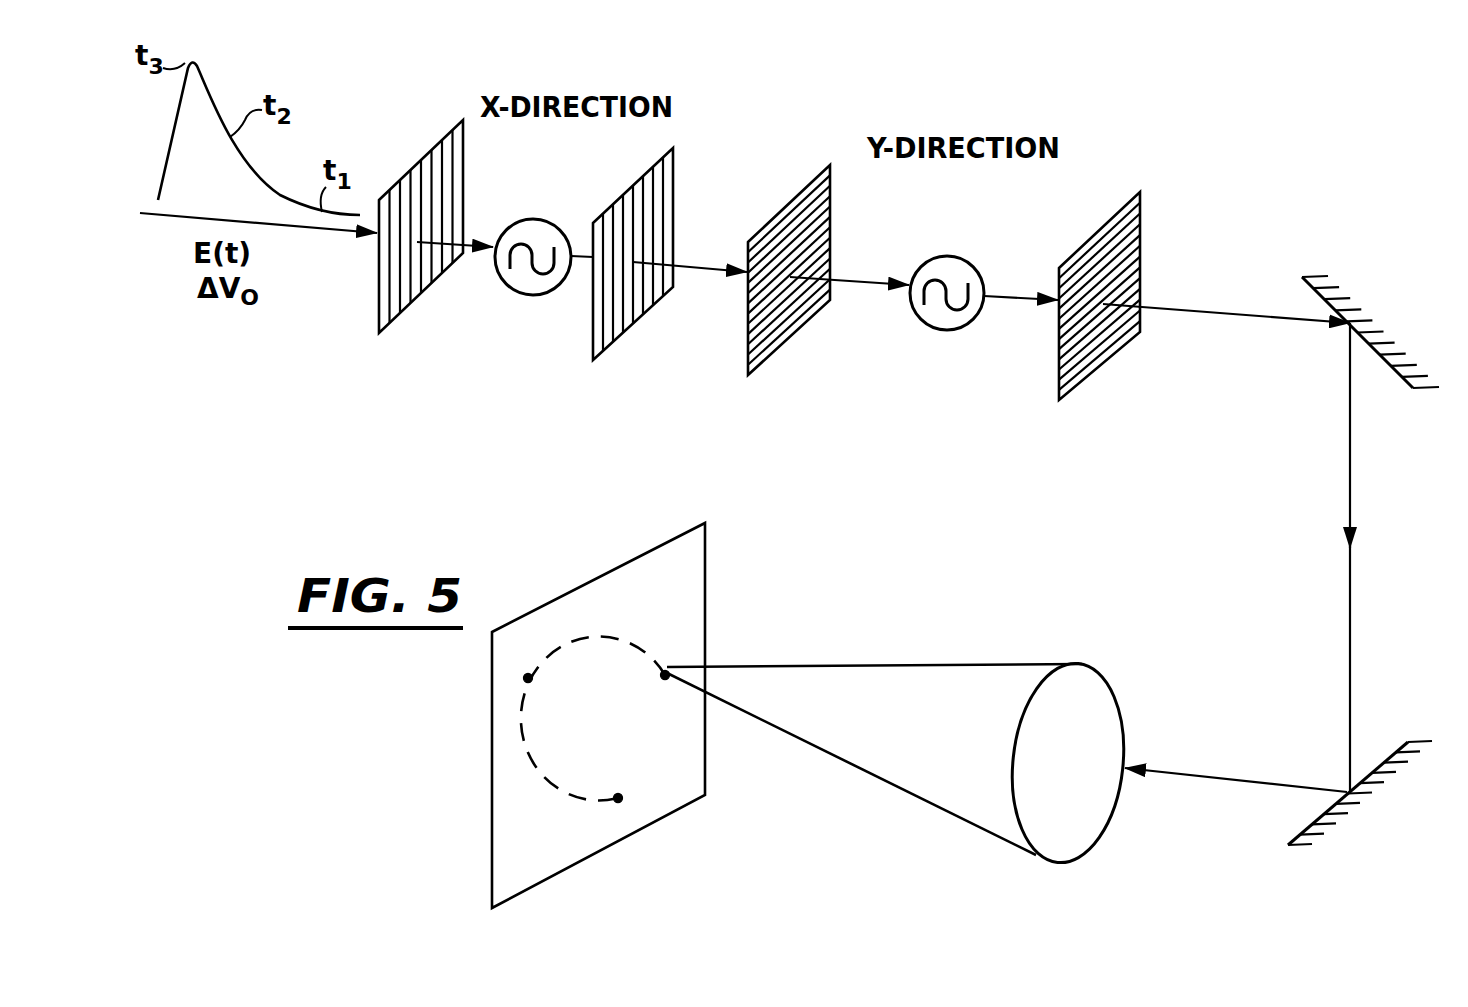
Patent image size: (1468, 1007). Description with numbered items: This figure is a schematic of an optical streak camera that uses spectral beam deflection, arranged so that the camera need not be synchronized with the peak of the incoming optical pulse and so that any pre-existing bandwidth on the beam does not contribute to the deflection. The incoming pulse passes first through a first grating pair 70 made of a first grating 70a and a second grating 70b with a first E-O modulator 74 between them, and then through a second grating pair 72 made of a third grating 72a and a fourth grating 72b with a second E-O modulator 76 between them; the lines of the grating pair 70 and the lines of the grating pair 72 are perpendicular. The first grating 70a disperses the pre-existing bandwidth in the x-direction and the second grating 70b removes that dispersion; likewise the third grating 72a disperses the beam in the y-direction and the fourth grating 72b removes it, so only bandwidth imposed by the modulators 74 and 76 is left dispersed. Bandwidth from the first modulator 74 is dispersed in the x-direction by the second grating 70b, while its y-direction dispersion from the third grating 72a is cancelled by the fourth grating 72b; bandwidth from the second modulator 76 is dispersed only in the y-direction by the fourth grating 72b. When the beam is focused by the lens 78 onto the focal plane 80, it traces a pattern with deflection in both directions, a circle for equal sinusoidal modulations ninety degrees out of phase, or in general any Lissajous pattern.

The first grating pair 70 is at (490, 315).
The first grating 70a is at (378, 297).
The second grating 70b is at (630, 323).
The first E-O modulator 74 is at (527, 221).
The second grating pair 72 is at (947, 357).
The third grating 72a is at (778, 343).
The fourth grating 72b is at (1103, 363).
The second E-O modulator 76 is at (932, 258).
The lens 78 is at (1110, 683).
The focal plane 80 is at (702, 715).